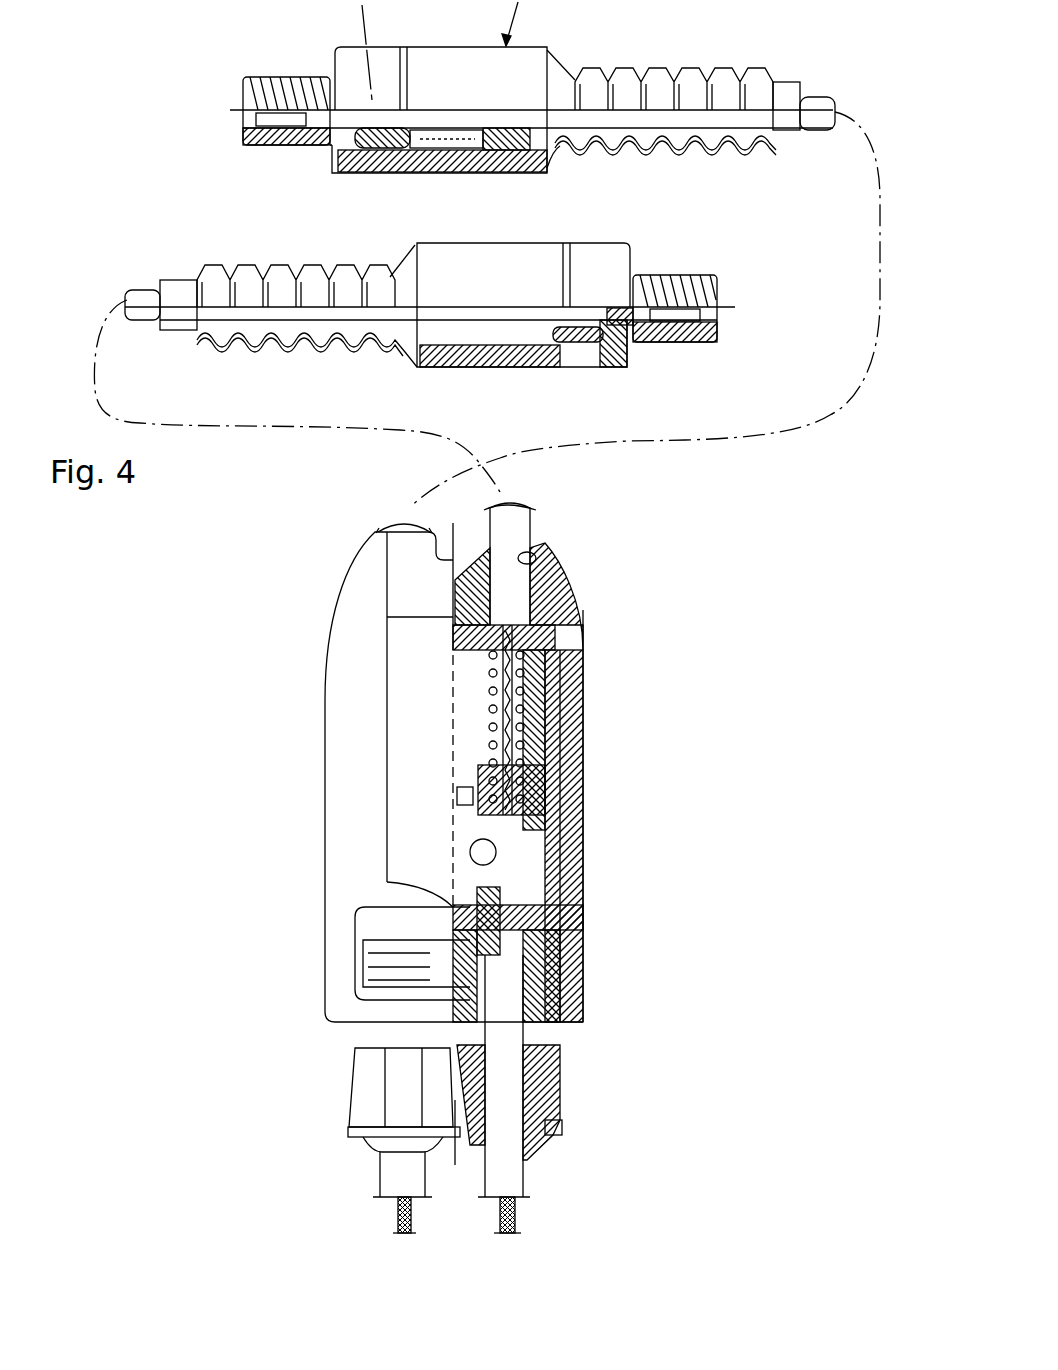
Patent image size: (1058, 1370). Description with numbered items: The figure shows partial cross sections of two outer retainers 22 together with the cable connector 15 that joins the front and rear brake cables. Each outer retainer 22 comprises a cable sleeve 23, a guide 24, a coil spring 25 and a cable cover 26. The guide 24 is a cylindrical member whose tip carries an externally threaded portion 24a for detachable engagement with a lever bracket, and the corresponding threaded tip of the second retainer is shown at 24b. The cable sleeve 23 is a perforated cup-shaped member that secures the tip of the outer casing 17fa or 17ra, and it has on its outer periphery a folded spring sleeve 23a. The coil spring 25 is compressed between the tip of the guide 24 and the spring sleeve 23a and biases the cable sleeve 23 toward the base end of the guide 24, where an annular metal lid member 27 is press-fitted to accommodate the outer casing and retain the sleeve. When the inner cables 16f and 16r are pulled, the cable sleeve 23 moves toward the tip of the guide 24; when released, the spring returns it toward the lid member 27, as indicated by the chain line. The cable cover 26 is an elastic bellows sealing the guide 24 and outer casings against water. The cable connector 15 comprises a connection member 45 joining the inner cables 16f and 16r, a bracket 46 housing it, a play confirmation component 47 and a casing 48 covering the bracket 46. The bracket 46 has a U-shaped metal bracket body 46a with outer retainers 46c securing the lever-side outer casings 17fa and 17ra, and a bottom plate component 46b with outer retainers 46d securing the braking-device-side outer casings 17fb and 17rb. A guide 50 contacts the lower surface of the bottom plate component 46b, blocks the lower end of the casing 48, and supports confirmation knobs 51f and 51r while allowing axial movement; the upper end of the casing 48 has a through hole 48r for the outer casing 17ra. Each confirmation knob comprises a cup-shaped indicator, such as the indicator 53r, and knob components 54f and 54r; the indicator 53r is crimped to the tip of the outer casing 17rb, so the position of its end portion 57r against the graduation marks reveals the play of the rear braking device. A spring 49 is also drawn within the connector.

The cable connector 15 is at (590, 828).
The inner cable 16f is at (398, 1215).
The inner cable 16r is at (518, 1216).
The outer casing 17fa is at (815, 97).
The outer casing 17fb is at (382, 1172).
The outer casing 17ra is at (140, 296).
The outer casing 17rb is at (523, 1162).
The outer retainer 22 is at (368, 355).
The cable sleeve 23 is at (345, 176).
The spring sleeve 23a is at (405, 170).
The guide 24 is at (373, 174).
The externally threaded portion 24a is at (280, 77).
The rear threaded portion 24b is at (695, 276).
The coil spring 25 is at (640, 395).
The cable cover 26 is at (718, 150).
The lid member 27 is at (549, 172).
The connection member 45 is at (507, 859).
The bracket 46 is at (553, 723).
The bracket body 46a is at (583, 663).
The bottom plate component 46b is at (583, 918).
The outer retainer 46c is at (545, 615).
The outer retainer 46d is at (583, 1005).
The play confirmation component 47 is at (363, 978).
The casing 48 is at (589, 617).
The through hole 48r is at (535, 565).
The spring 49 is at (555, 685).
The guide 50 is at (585, 1022).
The confirmation knob 51f is at (351, 1068).
The confirmation knob 51r is at (574, 1069).
The indicator 53r is at (583, 945).
The knob component 54f is at (360, 1107).
The knob component 54r is at (565, 1100).
The end portion 57r is at (387, 880).